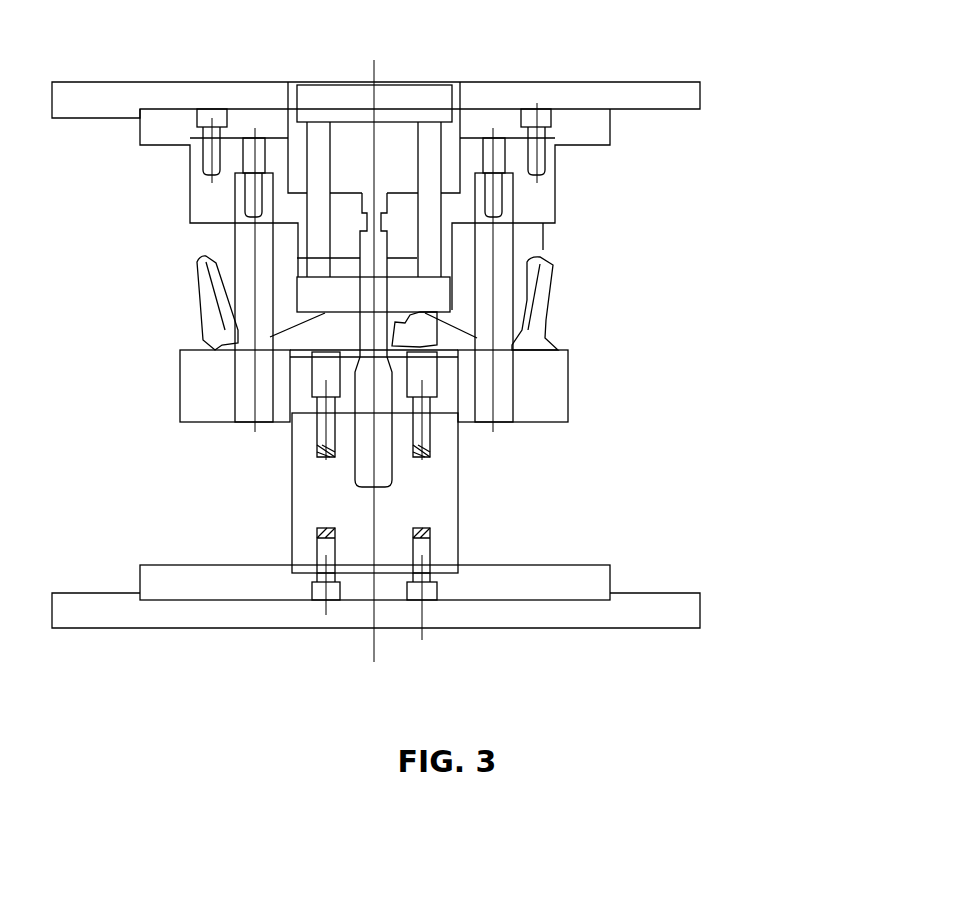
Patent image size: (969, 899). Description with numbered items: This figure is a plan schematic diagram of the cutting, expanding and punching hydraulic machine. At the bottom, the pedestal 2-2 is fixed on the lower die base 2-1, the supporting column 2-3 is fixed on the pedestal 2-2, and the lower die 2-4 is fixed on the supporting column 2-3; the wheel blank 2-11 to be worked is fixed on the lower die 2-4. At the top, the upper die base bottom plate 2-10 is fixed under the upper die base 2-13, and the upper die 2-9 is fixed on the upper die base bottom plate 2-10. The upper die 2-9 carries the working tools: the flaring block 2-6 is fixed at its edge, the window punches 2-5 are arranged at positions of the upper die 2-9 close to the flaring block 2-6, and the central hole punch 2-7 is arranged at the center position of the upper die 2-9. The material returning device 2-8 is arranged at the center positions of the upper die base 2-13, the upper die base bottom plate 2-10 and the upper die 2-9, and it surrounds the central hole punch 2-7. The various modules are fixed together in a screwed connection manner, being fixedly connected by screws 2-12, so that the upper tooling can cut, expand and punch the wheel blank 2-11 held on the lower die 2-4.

The lower die base 2-1 is at (640, 617).
The pedestal 2-2 is at (590, 580).
The supporting column 2-3 is at (428, 505).
The lower die 2-4 is at (527, 407).
The window punches 2-5 is at (497, 322).
The flaring block 2-6 is at (520, 257).
The central hole punch 2-7 is at (375, 293).
The material returning device 2-8 is at (430, 220).
The upper die 2-9 is at (467, 153).
The upper die base bottom plate 2-10 is at (467, 122).
The wheel blank 2-11 is at (200, 303).
The screws 2-12 is at (495, 157).
The upper die base 2-13 is at (700, 82).